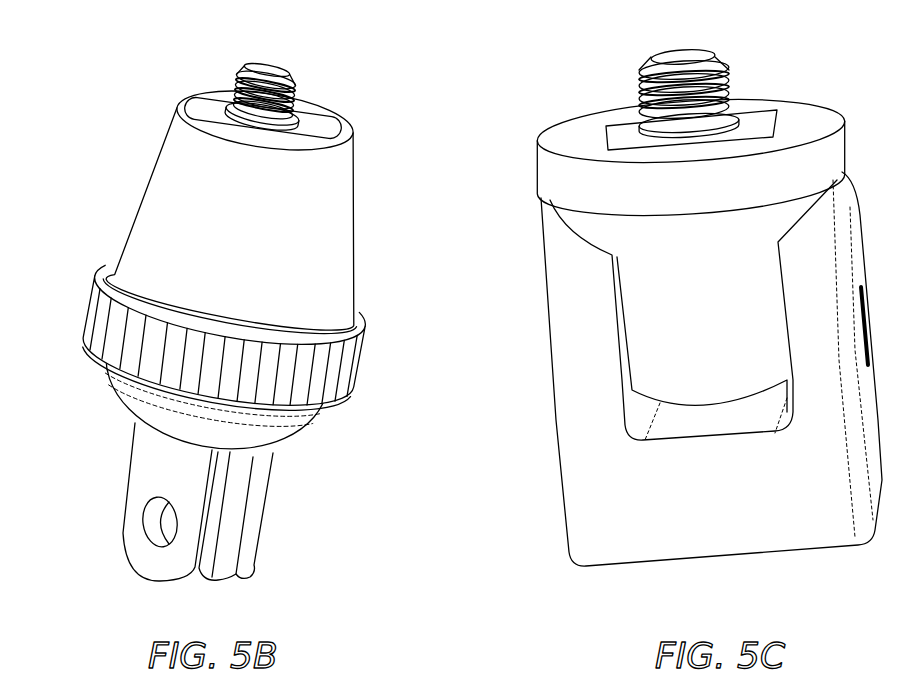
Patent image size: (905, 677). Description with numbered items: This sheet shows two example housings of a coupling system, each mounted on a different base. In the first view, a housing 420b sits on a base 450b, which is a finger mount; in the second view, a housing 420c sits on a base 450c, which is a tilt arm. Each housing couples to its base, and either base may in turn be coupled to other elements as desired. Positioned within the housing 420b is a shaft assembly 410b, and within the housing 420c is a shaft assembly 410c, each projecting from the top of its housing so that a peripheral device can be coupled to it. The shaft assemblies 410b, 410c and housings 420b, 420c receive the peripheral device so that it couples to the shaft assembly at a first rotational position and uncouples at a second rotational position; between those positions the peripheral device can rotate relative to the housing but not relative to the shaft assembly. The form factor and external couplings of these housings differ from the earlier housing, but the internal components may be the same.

In FIG. 5B, the shaft assembly 410b is at (232, 53).
In FIG. 5B, the housing 420b is at (129, 133).
In FIG. 5B, the base 450b is at (371, 404).
In FIG. 5C, the shaft assembly 410c is at (617, 77).
In FIG. 5C, the housing 420c is at (548, 114).
In FIG. 5C, the base 450c is at (525, 346).